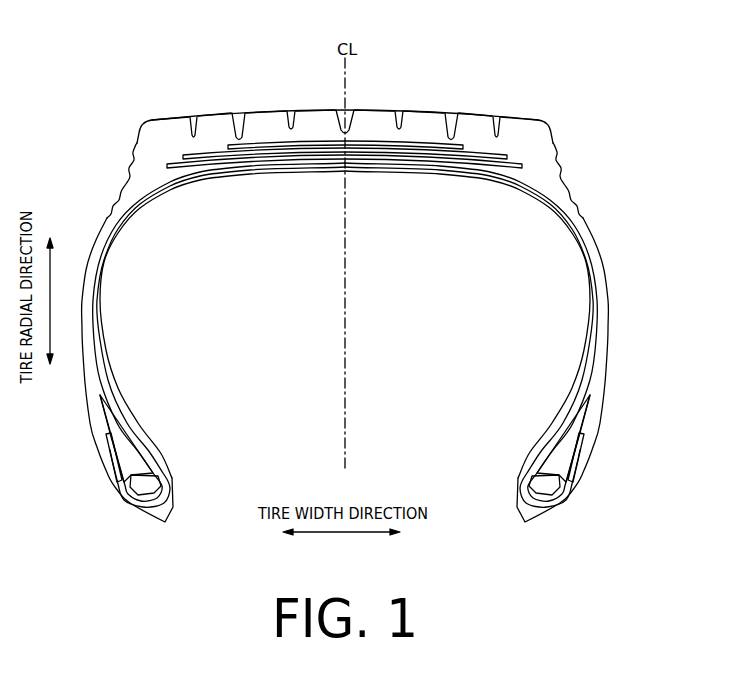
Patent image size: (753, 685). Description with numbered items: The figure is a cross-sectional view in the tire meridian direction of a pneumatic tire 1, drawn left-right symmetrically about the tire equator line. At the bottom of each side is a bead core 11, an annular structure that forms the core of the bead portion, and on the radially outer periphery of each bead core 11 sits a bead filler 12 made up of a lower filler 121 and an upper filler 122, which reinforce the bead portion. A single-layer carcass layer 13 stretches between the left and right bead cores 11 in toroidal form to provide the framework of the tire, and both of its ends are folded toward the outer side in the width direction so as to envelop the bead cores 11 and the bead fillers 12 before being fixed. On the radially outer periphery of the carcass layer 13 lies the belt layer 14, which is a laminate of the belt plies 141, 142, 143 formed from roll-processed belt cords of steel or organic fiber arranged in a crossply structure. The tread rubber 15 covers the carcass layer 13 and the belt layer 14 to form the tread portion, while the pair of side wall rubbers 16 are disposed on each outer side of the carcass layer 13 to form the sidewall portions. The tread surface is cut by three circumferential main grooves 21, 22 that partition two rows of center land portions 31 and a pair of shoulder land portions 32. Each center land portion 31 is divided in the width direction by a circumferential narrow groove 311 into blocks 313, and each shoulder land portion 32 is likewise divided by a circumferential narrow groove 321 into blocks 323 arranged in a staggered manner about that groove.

The pneumatic tire 1 is at (622, 90).
The bead core 11 is at (137, 485).
The bead filler 12 is at (52, 422).
The lower filler 121 is at (135, 458).
The upper filler 122 is at (127, 430).
The carcass layer 13 is at (541, 193).
The belt layer 14 is at (488, 207).
The belt ply 141 is at (472, 164).
The belt ply 142 is at (438, 157).
The belt ply 143 is at (409, 150).
The tread rubber 15 is at (526, 112).
The side wall rubber 16 is at (127, 183).
The circumferential main groove 21 is at (351, 112).
The circumferential main groove 22 is at (240, 114).
The center land portion 31 is at (273, 63).
The circumferential narrow groove 311 is at (291, 111).
The block 313 is at (263, 113).
The shoulder land portion 32 is at (162, 63).
The circumferential narrow groove 321 is at (192, 117).
The block 323 is at (165, 118).